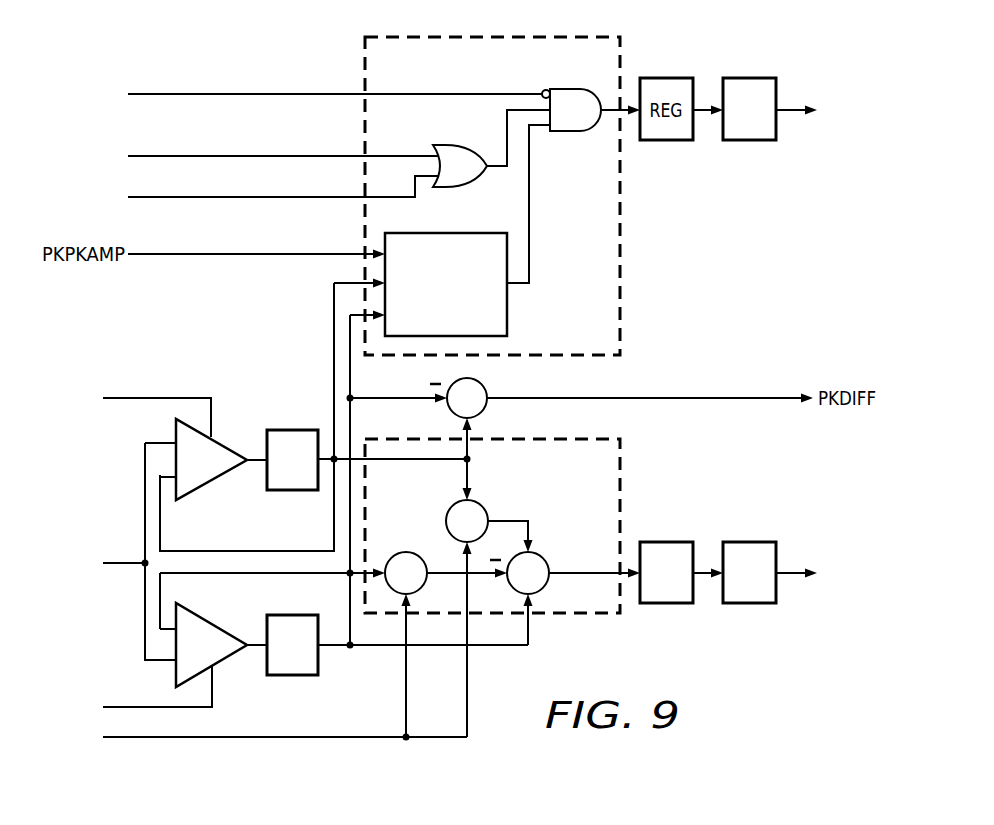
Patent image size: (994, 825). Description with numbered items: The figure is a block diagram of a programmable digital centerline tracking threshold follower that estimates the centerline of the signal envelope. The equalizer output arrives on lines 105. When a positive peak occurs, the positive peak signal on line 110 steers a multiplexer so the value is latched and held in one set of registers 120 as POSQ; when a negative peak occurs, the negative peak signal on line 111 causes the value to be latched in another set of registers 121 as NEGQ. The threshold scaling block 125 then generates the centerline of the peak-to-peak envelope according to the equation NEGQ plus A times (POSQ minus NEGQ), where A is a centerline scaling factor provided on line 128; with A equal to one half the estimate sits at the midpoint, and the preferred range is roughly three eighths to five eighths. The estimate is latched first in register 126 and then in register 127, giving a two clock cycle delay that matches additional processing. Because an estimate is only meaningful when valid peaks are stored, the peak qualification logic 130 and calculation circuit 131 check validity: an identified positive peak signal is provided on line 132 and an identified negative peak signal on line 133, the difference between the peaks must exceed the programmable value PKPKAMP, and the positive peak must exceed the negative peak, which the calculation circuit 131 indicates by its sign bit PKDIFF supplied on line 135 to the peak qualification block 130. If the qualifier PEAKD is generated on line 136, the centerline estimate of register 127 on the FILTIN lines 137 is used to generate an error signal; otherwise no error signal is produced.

The lines 105 is at (120, 566).
The positive peak signal line 110 is at (157, 397).
The negative peak signal line 111 is at (130, 706).
The set of registers 120 is at (293, 491).
The set of registers 121 is at (293, 676).
The block 125 is at (623, 482).
The register 126 is at (668, 604).
The register 127 is at (752, 604).
The line 128 is at (165, 738).
The peak qualification logic 130 is at (596, 257).
The calculation circuit 131 is at (484, 388).
The line 132 is at (183, 155).
The line 133 is at (183, 199).
The line 135 is at (183, 93).
The line 136 is at (793, 104).
The FILTIN lines 137 is at (792, 574).